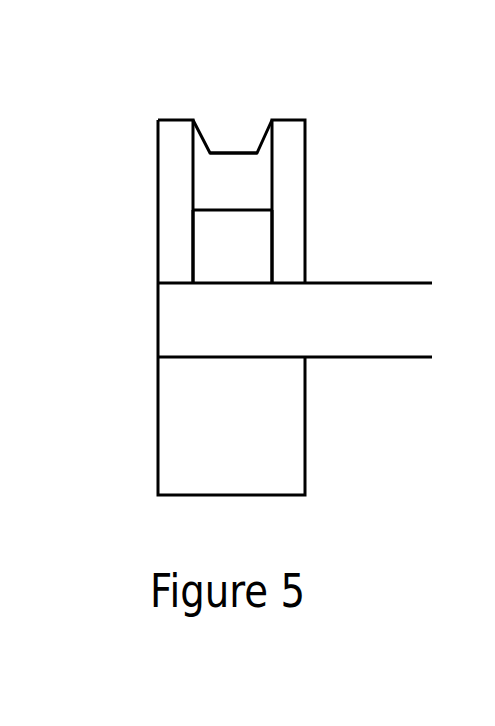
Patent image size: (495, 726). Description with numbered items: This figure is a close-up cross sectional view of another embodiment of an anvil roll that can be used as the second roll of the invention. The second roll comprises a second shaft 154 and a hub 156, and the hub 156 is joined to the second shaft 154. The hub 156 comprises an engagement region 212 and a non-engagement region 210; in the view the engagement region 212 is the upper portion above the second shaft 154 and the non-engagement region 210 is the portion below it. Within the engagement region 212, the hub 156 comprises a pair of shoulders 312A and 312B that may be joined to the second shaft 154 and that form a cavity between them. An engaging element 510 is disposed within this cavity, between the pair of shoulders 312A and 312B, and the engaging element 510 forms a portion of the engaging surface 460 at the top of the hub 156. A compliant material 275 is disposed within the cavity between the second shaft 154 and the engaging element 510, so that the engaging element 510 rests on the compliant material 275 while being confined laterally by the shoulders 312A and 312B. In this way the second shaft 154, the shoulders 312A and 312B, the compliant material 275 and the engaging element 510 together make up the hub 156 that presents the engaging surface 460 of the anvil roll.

The hub 156 is at (125, 153).
The shoulder 312A is at (170, 138).
The shoulder 312B is at (292, 133).
The engagement region 212 is at (208, 125).
The engaging surface 460 is at (228, 150).
The engaging element 510 is at (262, 188).
The compliant material 275 is at (208, 250).
The second shaft 154 is at (335, 303).
The non-engagement region 210 is at (270, 497).